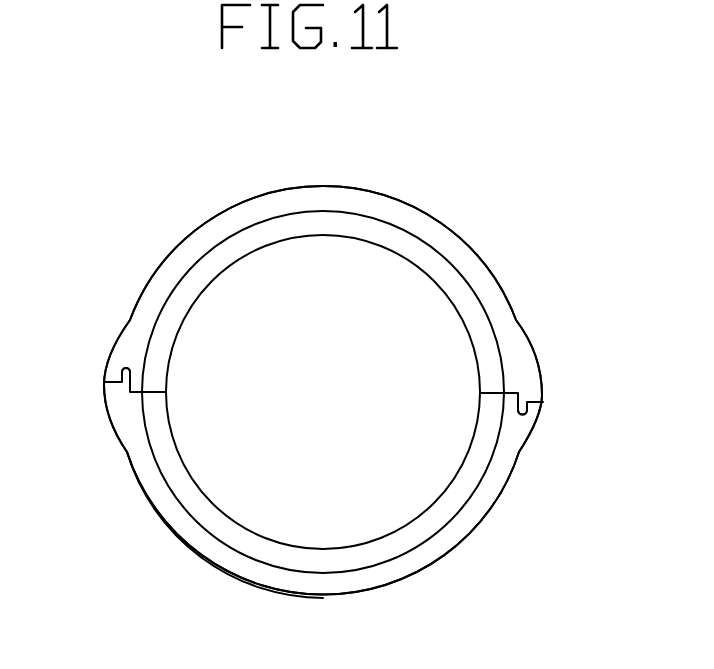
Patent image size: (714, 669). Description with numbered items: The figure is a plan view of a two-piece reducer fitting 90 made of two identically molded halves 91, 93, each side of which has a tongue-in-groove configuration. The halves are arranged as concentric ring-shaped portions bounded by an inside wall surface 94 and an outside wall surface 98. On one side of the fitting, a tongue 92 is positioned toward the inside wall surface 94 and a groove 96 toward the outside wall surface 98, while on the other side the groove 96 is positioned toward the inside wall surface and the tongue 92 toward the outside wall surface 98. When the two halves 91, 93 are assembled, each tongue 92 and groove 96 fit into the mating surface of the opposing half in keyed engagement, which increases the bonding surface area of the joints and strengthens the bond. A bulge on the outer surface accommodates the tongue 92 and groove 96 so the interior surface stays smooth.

The reducer fitting 90 is at (444, 172).
The molded half 91 is at (327, 212).
The tongue 92 is at (112, 402).
The molded half 93 is at (433, 552).
The inside wall surface 94 is at (230, 252).
The groove 96 is at (108, 348).
The outside wall surface 98 is at (177, 538).